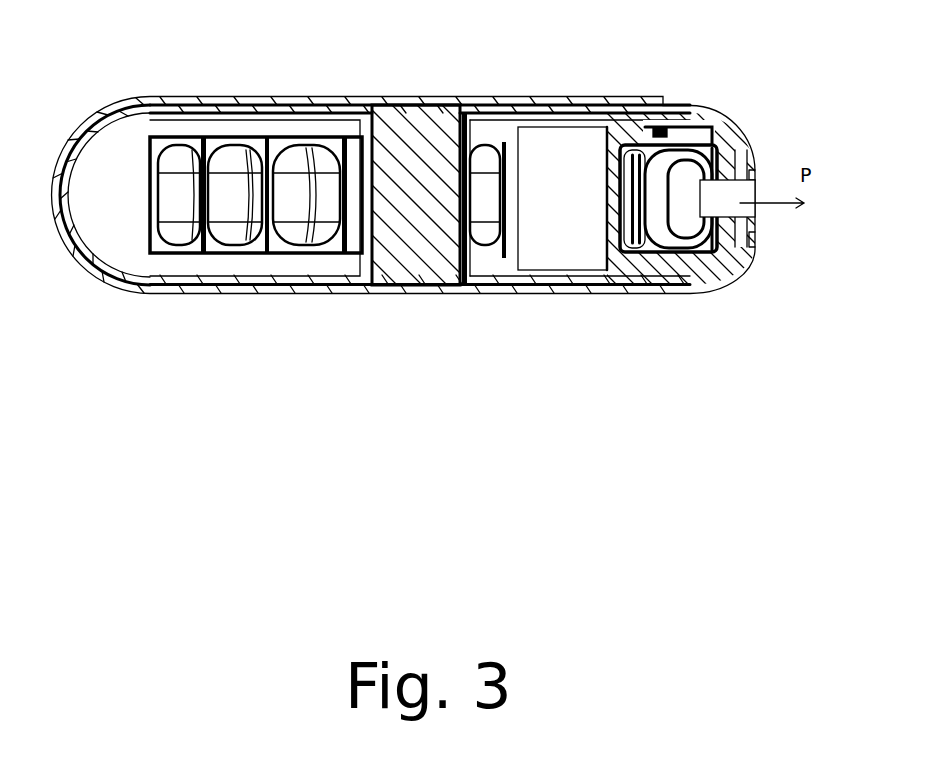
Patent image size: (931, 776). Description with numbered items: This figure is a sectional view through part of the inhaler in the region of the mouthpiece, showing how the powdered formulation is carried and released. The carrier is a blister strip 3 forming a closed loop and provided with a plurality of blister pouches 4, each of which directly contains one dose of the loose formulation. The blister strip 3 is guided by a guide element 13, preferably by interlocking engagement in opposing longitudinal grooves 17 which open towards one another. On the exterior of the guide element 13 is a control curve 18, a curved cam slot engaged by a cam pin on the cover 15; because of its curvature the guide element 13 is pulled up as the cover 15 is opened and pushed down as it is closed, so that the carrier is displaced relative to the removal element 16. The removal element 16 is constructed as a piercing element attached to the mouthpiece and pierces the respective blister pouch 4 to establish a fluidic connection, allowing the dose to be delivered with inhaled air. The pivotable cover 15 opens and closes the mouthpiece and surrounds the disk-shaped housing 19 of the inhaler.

The blister strip 3 is at (153, 243).
The blister pouch 4 is at (323, 192).
The guide element 13 is at (647, 262).
The cover 15 is at (430, 100).
The removal element 16 is at (700, 220).
The longitudinal grooves 17 is at (708, 252).
The control curve 18 is at (657, 130).
The housing 19 is at (710, 105).